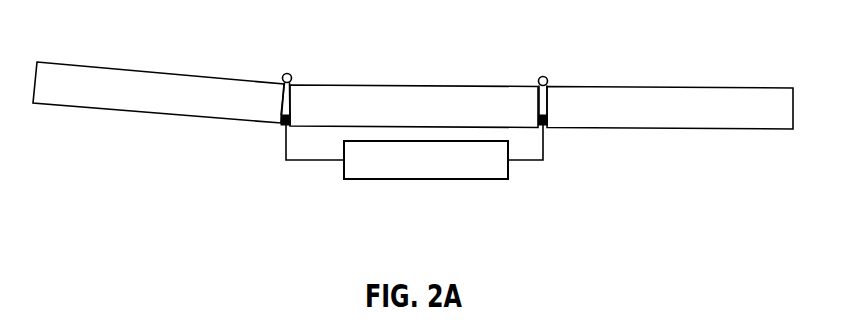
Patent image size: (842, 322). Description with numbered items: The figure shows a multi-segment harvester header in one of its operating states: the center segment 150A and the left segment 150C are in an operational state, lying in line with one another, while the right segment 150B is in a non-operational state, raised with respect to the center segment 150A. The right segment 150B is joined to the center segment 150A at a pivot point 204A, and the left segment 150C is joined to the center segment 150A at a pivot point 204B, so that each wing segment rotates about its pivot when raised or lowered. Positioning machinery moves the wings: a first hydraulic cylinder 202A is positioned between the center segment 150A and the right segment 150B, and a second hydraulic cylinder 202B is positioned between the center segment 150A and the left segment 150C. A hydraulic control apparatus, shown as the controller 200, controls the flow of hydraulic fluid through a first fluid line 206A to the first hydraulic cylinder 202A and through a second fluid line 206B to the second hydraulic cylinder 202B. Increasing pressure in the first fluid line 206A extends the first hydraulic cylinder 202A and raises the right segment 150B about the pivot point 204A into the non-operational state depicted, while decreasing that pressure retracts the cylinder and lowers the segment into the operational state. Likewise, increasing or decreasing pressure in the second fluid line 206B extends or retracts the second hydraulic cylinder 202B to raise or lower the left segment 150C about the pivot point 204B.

The center segment 150A is at (413, 86).
The right segment 150B is at (130, 69).
The left segment 150C is at (668, 87).
The hydraulic control apparatus 200 is at (442, 180).
The first hydraulic cylinder 202A is at (280, 122).
The second hydraulic cylinder 202B is at (550, 123).
The pivot point 204A is at (289, 74).
The pivot point 204B is at (544, 76).
The first fluid line 206A is at (332, 161).
The second fluid line 206B is at (512, 163).